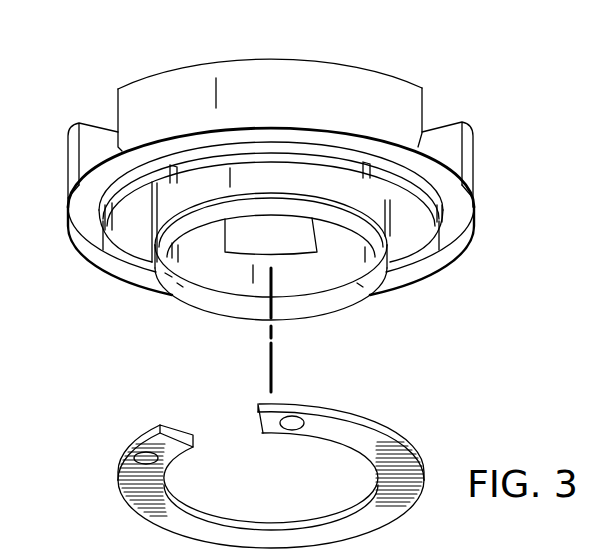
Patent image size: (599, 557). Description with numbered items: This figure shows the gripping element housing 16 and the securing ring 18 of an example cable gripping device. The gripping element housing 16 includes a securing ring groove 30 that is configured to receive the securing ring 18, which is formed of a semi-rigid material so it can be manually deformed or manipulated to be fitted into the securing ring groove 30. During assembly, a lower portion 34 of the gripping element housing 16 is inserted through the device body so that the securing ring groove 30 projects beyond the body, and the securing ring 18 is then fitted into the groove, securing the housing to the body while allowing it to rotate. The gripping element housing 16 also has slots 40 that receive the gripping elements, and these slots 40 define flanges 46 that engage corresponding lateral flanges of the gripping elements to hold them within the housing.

The gripping element housing 16 is at (175, 68).
The securing ring 18 is at (158, 427).
The securing ring groove 30 is at (278, 192).
The lower portion 34 is at (233, 306).
The slots 40 is at (88, 133).
The flanges 46 is at (80, 170).